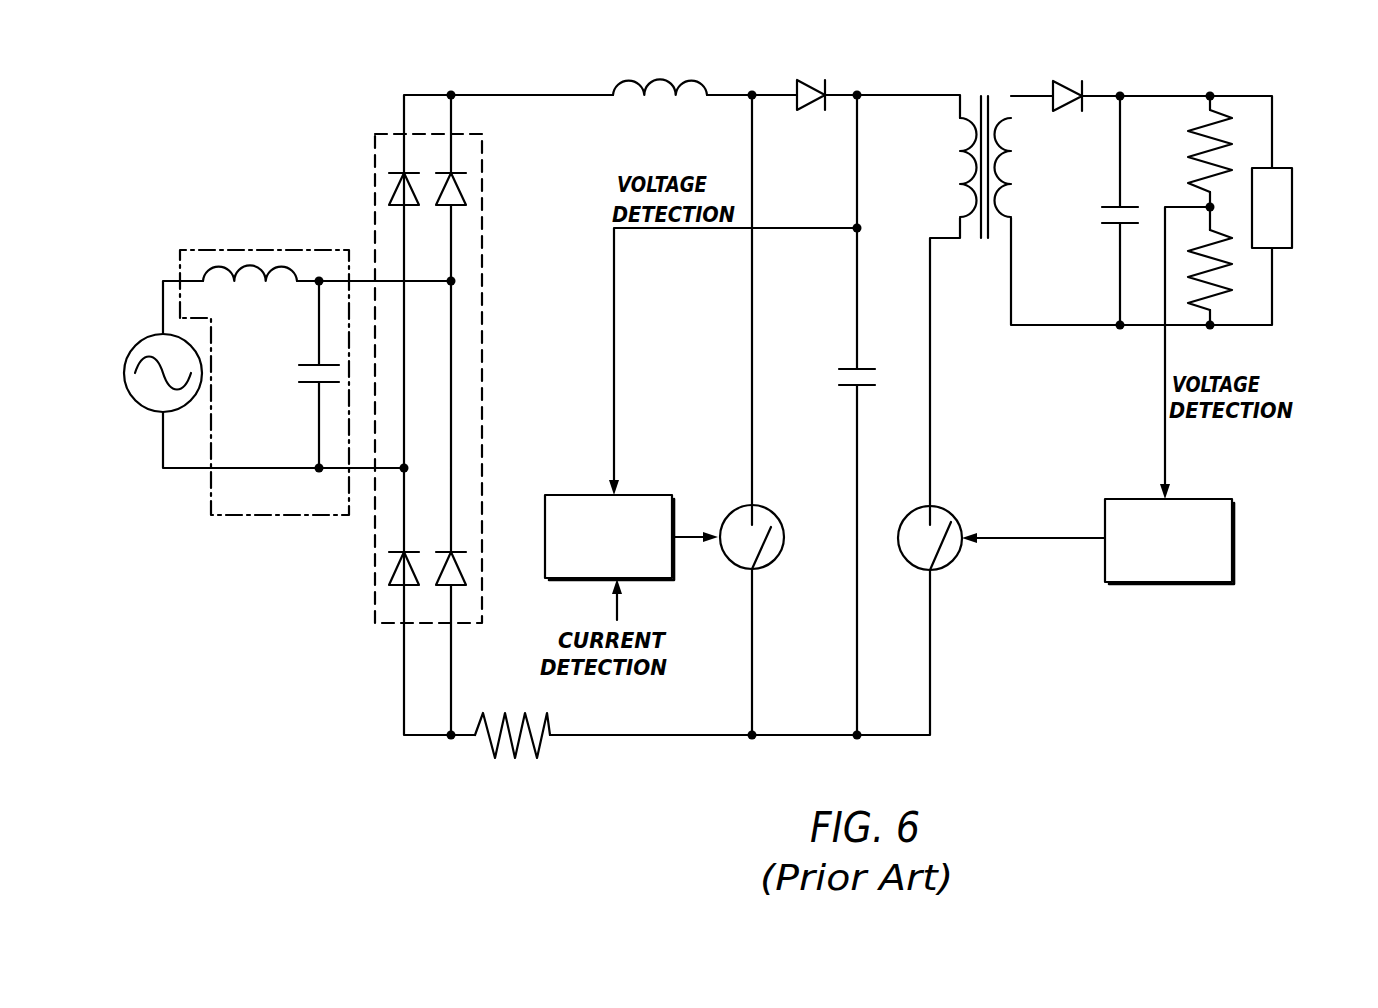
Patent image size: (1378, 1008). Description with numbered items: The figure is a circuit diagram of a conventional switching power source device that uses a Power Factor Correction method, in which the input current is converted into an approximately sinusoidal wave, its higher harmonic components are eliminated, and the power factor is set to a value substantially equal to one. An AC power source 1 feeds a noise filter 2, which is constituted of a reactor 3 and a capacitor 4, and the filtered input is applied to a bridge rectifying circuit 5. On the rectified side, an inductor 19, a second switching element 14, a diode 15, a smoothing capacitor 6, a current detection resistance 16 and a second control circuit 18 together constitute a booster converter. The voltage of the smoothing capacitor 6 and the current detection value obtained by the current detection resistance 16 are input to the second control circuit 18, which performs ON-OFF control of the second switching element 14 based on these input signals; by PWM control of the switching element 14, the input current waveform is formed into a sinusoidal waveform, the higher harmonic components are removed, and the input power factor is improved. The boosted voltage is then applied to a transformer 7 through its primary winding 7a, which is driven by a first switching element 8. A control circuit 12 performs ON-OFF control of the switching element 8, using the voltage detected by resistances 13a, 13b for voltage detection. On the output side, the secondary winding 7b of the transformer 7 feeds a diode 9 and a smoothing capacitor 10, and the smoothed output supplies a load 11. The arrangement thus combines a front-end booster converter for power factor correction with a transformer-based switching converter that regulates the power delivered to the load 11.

The AC power source 1 is at (143, 404).
The noise filter 2 is at (287, 517).
The reactor 3 is at (249, 283).
The capacitor 4 is at (297, 376).
The bridge rectifying circuit 5 is at (393, 133).
The smoothing capacitor 6 is at (838, 378).
The transformer 7 is at (980, 128).
The primary winding 7a is at (962, 165).
The secondary winding 7b is at (1008, 168).
The first switching element 8 is at (957, 560).
The diode 9 is at (1062, 84).
The smoothing capacitor 10 is at (1112, 226).
The load 11 is at (1293, 178).
The control circuit 12 is at (1120, 498).
The resistance for voltage detection 13a is at (1195, 148).
The resistance for voltage detection 13b is at (1232, 290).
The second switching element 14 is at (768, 512).
The diode 15 is at (805, 82).
The current detection resistance 16 is at (533, 760).
The second control circuit 18 is at (647, 493).
The inductor 19 is at (661, 80).